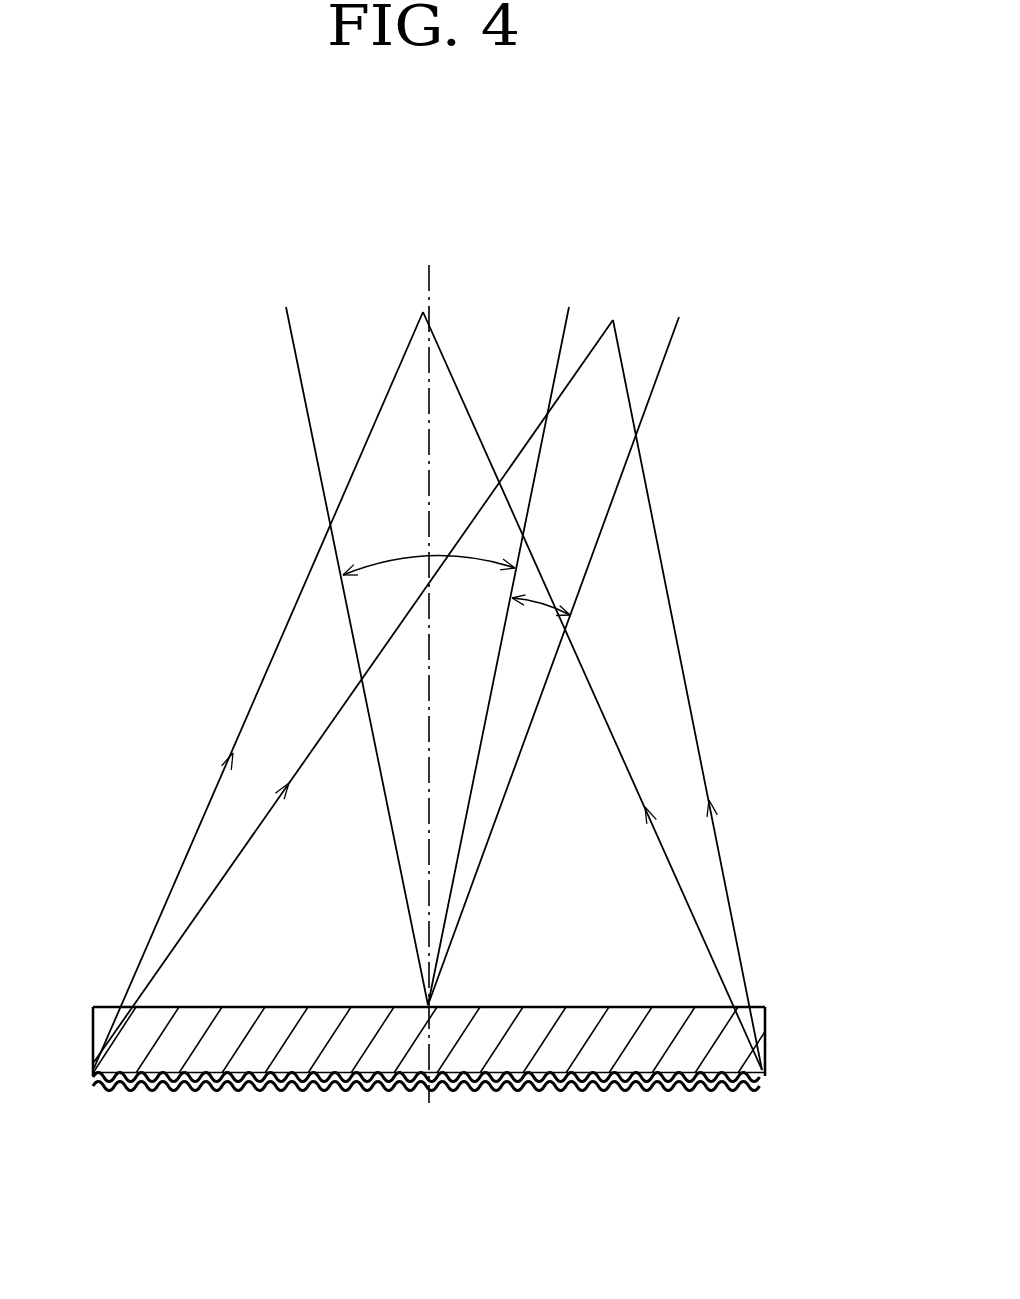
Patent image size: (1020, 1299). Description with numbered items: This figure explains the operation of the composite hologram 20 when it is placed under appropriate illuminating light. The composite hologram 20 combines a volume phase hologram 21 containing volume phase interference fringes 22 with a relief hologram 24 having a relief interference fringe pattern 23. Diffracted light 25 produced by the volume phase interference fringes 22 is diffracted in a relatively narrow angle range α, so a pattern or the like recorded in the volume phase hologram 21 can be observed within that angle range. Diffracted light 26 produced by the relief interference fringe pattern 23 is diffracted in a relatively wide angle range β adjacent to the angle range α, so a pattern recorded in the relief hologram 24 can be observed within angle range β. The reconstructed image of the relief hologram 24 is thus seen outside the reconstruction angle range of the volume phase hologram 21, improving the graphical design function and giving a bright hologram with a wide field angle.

The composite hologram 20 is at (462, 1170).
The volume phase hologram 21 is at (770, 1028).
The volume phase interference fringes 22 is at (703, 1030).
The relief interference fringe pattern 23 is at (740, 1062).
The relief hologram 24 is at (767, 1075).
The diffracted light 25 is at (380, 655).
The diffracted light 26 is at (313, 575).